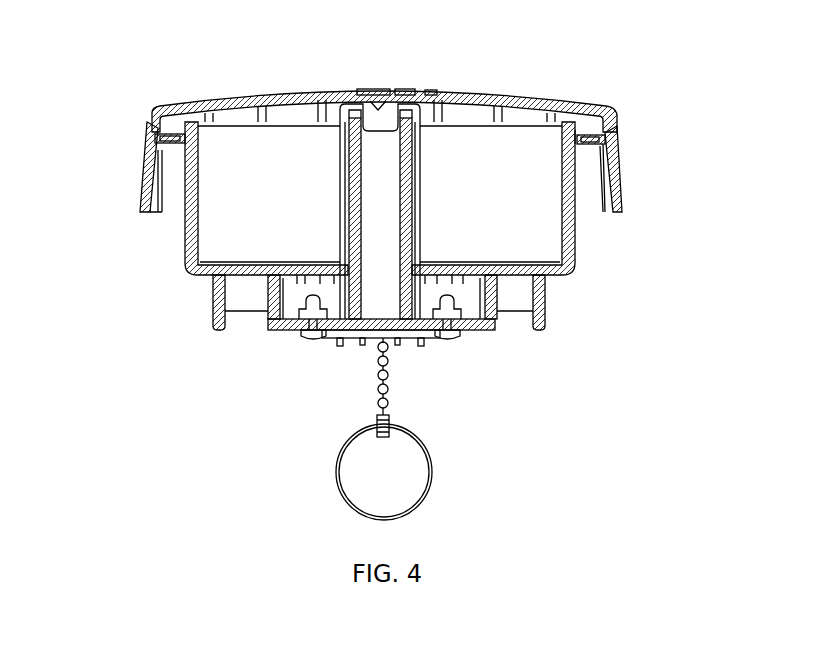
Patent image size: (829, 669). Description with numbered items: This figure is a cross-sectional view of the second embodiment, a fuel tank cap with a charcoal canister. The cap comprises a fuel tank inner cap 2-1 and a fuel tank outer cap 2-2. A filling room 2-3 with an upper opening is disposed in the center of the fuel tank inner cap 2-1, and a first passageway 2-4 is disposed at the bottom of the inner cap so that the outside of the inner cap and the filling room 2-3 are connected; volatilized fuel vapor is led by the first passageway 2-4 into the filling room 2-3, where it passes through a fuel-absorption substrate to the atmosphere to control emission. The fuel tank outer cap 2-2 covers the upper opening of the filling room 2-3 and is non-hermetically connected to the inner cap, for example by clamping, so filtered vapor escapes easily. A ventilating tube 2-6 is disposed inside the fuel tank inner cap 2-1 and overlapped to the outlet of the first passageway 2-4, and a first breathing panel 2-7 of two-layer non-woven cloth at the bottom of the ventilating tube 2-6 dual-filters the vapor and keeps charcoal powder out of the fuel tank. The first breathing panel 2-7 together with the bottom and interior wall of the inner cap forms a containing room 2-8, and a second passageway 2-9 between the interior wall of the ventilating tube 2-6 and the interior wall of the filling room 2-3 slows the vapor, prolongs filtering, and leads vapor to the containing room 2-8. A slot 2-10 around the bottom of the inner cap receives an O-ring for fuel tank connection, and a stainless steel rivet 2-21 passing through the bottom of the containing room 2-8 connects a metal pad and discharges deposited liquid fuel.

The fuel tank inner cap 2-1 is at (565, 213).
The fuel tank outer cap 2-2 is at (580, 110).
The filling room 2-3 is at (412, 100).
The first passageway 2-4 is at (382, 240).
The ventilating tube 2-6 is at (417, 170).
The first breathing panel 2-7 is at (233, 263).
The containing room 2-8 is at (366, 330).
The second passageway 2-9 is at (348, 188).
The slot 2-10 is at (243, 293).
The stainless steel rivet 2-21 is at (455, 327).